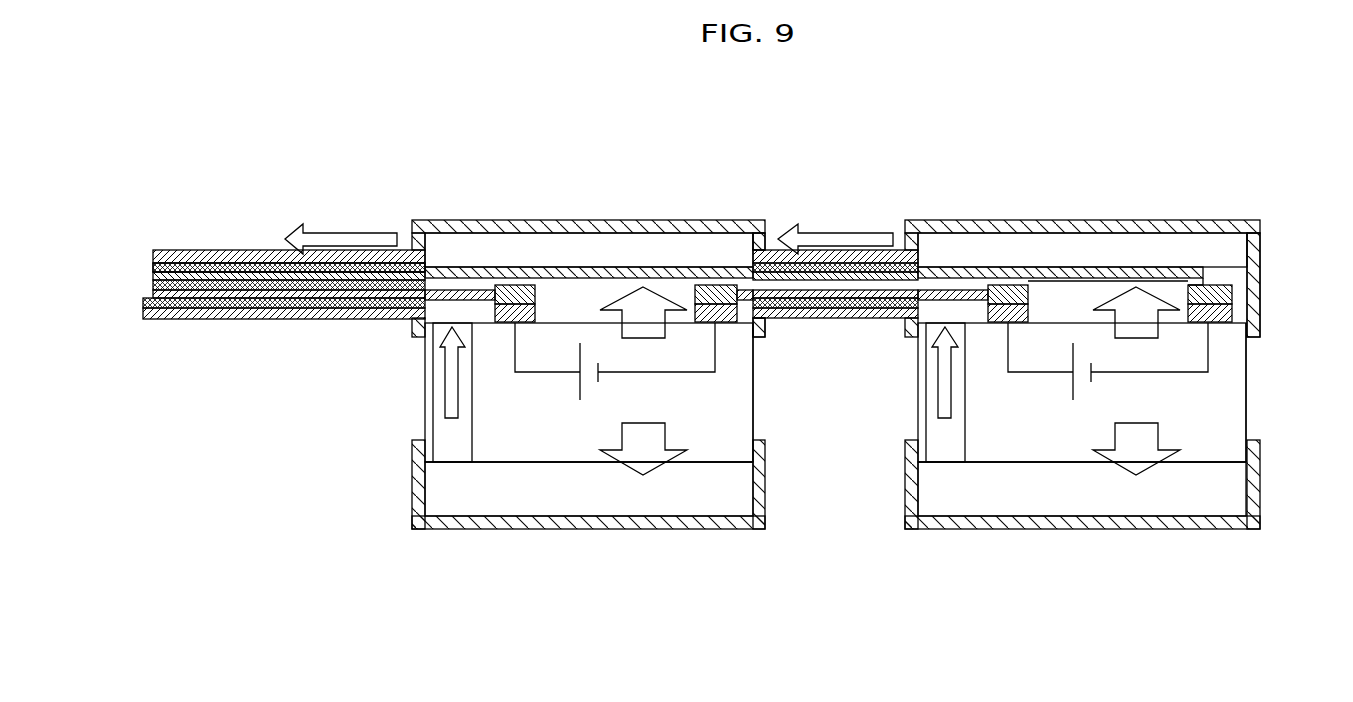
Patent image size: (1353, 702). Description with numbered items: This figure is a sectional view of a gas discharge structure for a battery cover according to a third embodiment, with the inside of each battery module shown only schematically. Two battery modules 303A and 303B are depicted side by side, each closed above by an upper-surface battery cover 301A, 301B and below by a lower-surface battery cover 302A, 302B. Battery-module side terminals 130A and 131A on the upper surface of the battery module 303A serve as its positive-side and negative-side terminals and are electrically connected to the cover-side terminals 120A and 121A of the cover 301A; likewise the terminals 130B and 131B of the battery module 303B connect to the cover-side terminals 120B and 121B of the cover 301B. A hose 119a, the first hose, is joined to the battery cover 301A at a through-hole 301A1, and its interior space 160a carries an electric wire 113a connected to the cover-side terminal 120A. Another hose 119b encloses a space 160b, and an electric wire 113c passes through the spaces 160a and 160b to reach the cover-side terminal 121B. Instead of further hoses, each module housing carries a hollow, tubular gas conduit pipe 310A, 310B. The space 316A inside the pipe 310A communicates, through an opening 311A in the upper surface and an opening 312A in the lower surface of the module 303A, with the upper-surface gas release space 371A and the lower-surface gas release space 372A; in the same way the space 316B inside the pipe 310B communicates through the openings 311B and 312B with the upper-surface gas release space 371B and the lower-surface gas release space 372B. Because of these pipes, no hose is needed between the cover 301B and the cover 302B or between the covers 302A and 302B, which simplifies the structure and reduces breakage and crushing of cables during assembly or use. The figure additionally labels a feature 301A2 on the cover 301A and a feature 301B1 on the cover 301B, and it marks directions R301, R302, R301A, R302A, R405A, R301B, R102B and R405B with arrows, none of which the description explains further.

The space within the hose 160a is at (213, 250).
The electric wire 113c is at (153, 268).
The electric wire 113a is at (148, 295).
The hose 119a is at (247, 319).
The cable moving direction R301 is at (341, 229).
The battery cover 301A is at (703, 221).
The through-hole 301A1 is at (437, 258).
The housing wall 301A2 is at (777, 248).
The opening 311A is at (415, 327).
The upper-surface gas release space 371A is at (600, 250).
The cover-side terminal 120A is at (513, 285).
The battery-module side terminal 130A is at (540, 305).
The cover-side terminal 121A is at (727, 298).
The battery-module side terminal 131A is at (729, 322).
The upward movement direction R301A is at (650, 297).
The downward movement direction R302A is at (645, 437).
The gas conduit pipe 310A is at (475, 390).
The space within the gas conduit pipe 316A is at (462, 436).
The piston movement direction R405A is at (450, 375).
The opening 312A is at (445, 462).
The battery module 303A is at (745, 395).
The hose 119b is at (793, 318).
The lower-surface gas release space 372A is at (523, 503).
The lower-surface battery cover 302A is at (665, 522).
The cable moving direction R302 is at (835, 229).
The space within the hose 160b is at (903, 249).
The upper-surface battery cover 301B is at (1203, 228).
The housing wall 301B1 is at (933, 256).
The opening 311B is at (912, 322).
The upper-surface gas release space 371B is at (1090, 250).
The cover-side terminal 120B is at (990, 285).
The battery-module side terminal 130B is at (1031, 300).
The cover-side terminal 121B is at (1232, 291).
The battery-module side terminal 131B is at (1232, 311).
The upward movement direction R301B is at (1145, 295).
The downward movement direction R102B is at (1138, 436).
The gas conduit pipe 310B is at (968, 390).
The space within the gas conduit pipe 316B is at (955, 434).
The piston movement direction R405B is at (940, 400).
The opening 312B is at (945, 462).
The battery module 303B is at (1238, 381).
The lower-surface gas release space 372B is at (1015, 503).
The lower-surface battery cover 302B is at (1160, 522).